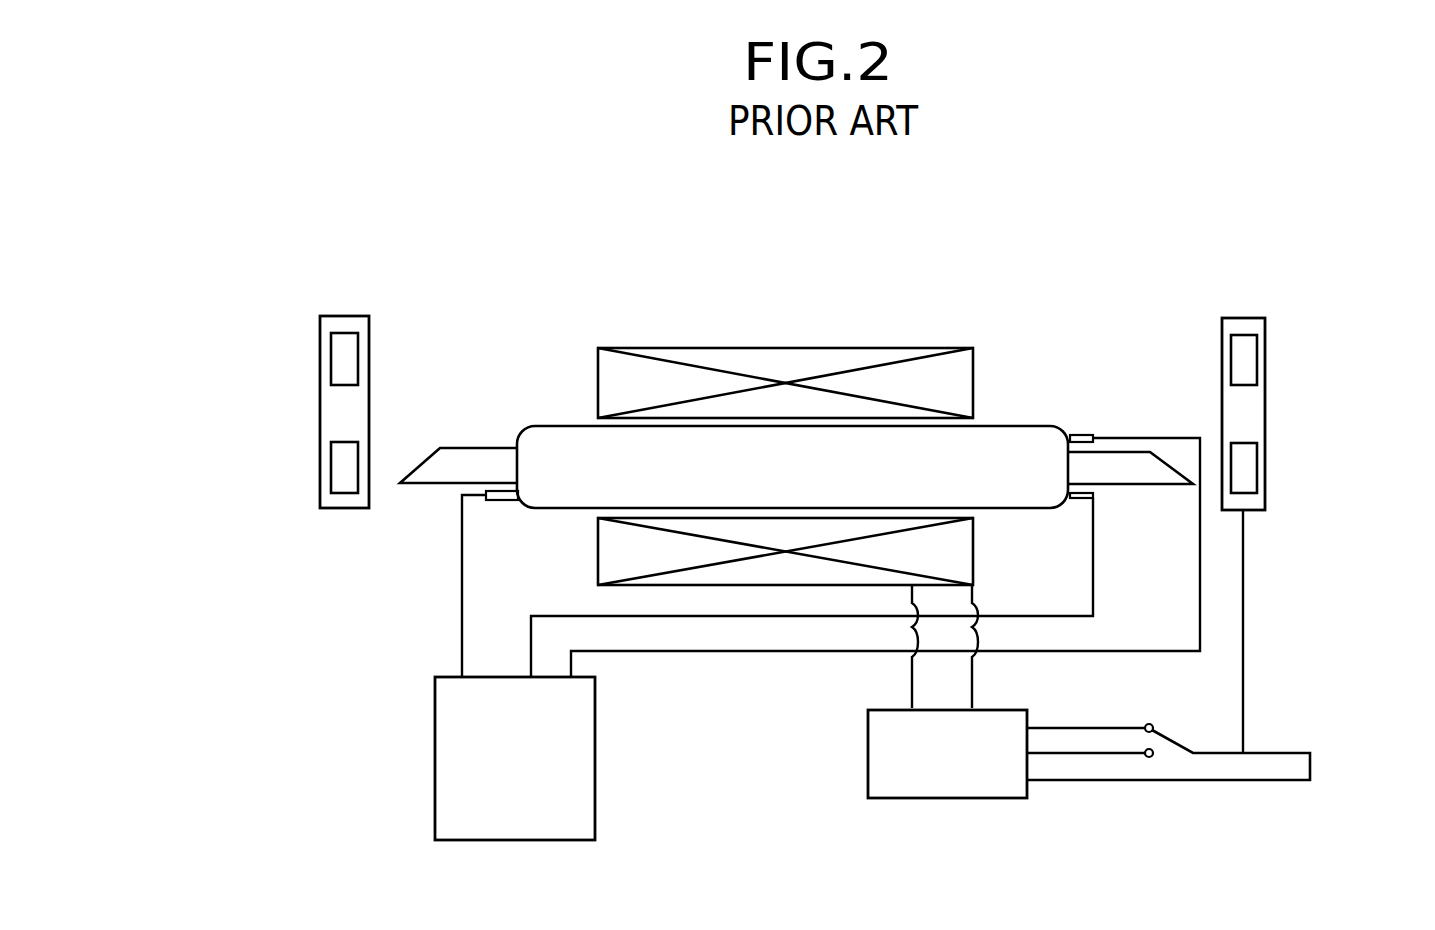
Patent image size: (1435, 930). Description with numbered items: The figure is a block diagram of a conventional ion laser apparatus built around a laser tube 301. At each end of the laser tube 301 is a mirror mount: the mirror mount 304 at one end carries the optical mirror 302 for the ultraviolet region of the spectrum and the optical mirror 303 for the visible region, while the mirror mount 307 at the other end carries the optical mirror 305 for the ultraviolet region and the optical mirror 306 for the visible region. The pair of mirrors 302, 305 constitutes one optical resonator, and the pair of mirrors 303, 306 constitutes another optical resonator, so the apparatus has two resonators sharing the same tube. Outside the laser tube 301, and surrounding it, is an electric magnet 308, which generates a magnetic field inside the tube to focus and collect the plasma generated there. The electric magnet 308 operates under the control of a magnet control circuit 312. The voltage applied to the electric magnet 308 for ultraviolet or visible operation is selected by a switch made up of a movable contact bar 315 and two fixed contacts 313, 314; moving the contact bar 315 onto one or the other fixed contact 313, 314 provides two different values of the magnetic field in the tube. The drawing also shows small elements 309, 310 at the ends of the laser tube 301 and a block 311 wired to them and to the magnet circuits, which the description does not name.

The laser tube 301 is at (1016, 425).
The optical mirror 302 is at (1250, 357).
The optical mirror 303 is at (1250, 472).
The mirror mount 304 is at (1238, 322).
The optical mirror 305 is at (333, 355).
The optical mirror 306 is at (333, 475).
The mirror mount 307 is at (340, 322).
The electric magnet 308 is at (790, 348).
The electrode 309 is at (1085, 432).
The electrode 310 is at (500, 502).
The power supply 311 is at (510, 828).
The magnet control circuit 312 is at (938, 800).
The fixed contact 313 is at (1149, 724).
The fixed contact 314 is at (1150, 757).
The movable contact bar 315 is at (1178, 740).